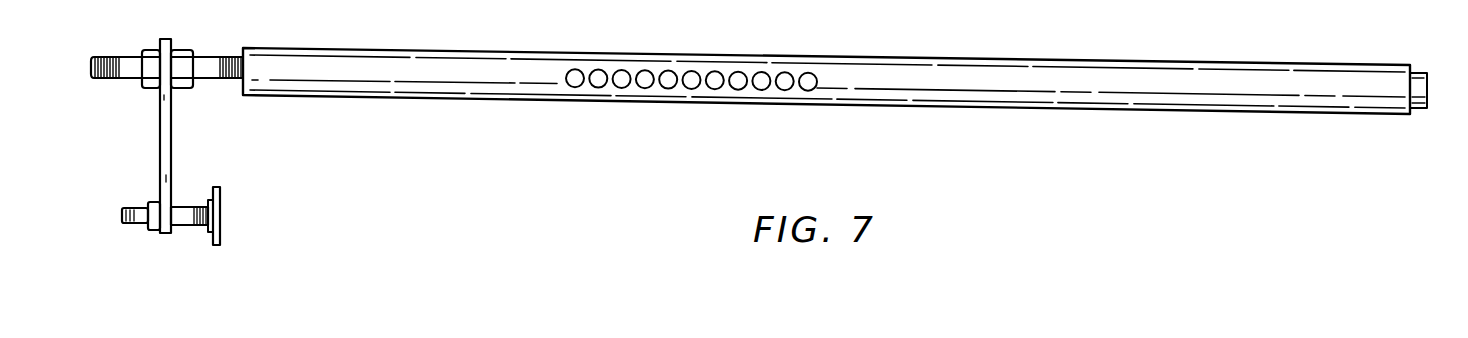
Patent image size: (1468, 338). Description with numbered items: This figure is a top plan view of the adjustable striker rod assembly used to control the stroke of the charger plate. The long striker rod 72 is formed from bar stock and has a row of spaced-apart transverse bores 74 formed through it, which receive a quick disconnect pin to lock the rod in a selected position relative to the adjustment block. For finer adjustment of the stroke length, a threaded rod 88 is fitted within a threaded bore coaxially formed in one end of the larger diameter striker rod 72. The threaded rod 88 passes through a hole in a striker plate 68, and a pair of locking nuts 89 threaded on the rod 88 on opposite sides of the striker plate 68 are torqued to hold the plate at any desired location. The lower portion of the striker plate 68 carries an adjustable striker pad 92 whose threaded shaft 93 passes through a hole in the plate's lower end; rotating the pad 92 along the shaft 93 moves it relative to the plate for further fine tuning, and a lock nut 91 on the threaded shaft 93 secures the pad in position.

The striker rod 72 is at (827, 55).
The transverse bores 74 is at (690, 76).
The threaded rod 88 is at (115, 57).
The locking nuts 89 is at (152, 48).
The striker plate 68 is at (160, 142).
The lock nut 91 is at (152, 202).
The threaded shaft 93 is at (183, 207).
The striker pad 92 is at (220, 200).